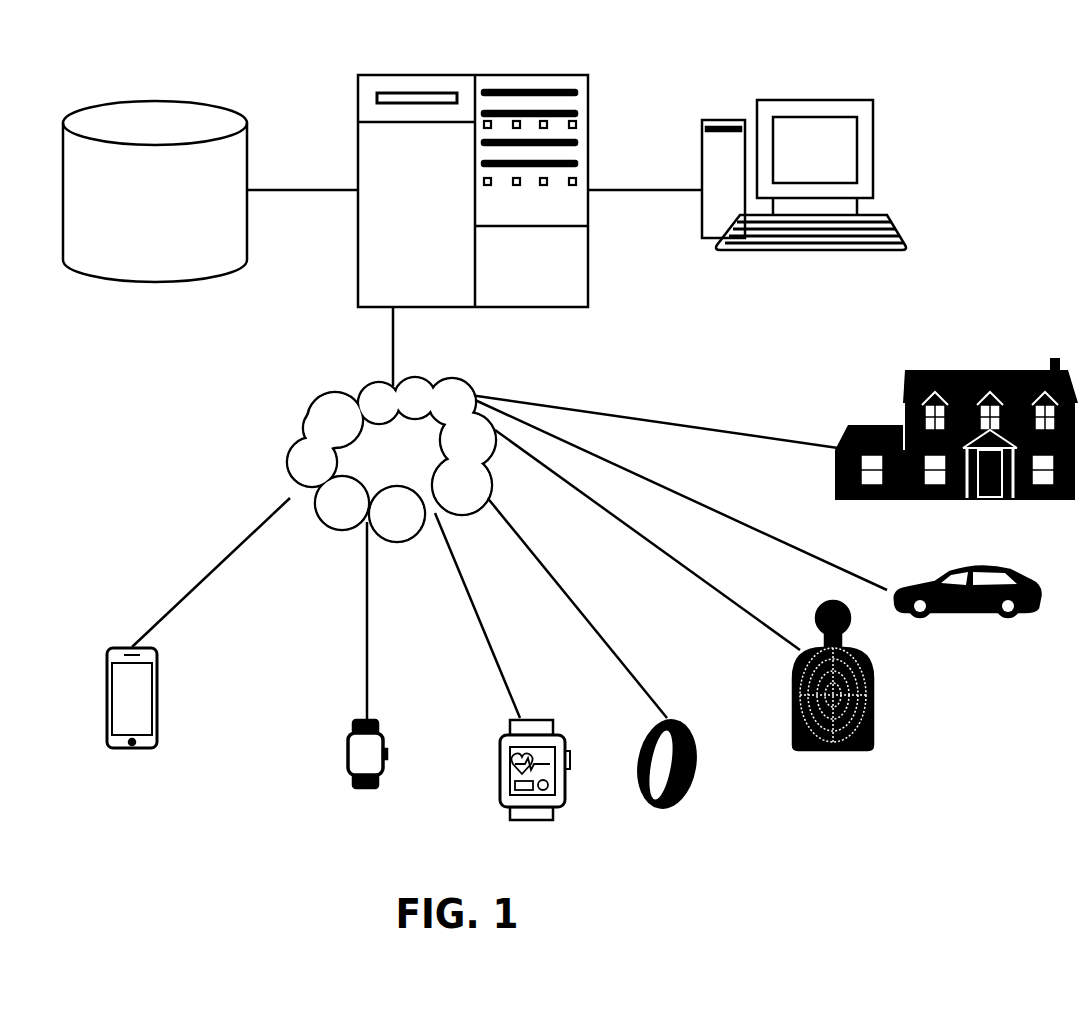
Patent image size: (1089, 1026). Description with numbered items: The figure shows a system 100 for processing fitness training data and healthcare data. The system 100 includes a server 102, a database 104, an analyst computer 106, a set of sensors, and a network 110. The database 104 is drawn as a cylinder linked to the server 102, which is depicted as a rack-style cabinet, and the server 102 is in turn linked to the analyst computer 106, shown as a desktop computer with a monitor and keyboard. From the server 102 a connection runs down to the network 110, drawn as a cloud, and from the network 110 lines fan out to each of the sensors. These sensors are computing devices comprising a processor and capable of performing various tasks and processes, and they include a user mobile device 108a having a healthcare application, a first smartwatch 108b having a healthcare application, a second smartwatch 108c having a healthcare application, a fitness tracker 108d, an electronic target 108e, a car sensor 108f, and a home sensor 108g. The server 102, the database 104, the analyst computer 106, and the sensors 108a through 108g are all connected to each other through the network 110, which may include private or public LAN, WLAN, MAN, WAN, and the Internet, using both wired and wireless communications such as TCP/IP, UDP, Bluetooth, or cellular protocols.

The system 100 is at (420, 43).
The server 102 is at (394, 240).
The database 104 is at (126, 218).
The analyst computer 106 is at (791, 163).
The user mobile device 108a is at (100, 782).
The first smartwatch 108b is at (333, 817).
The second smartwatch 108c is at (501, 853).
The fitness tracker 108d is at (637, 840).
The electronic target 108e is at (803, 782).
The car sensor 108f is at (953, 672).
The home sensor 108g is at (1010, 542).
The network 110 is at (368, 483).